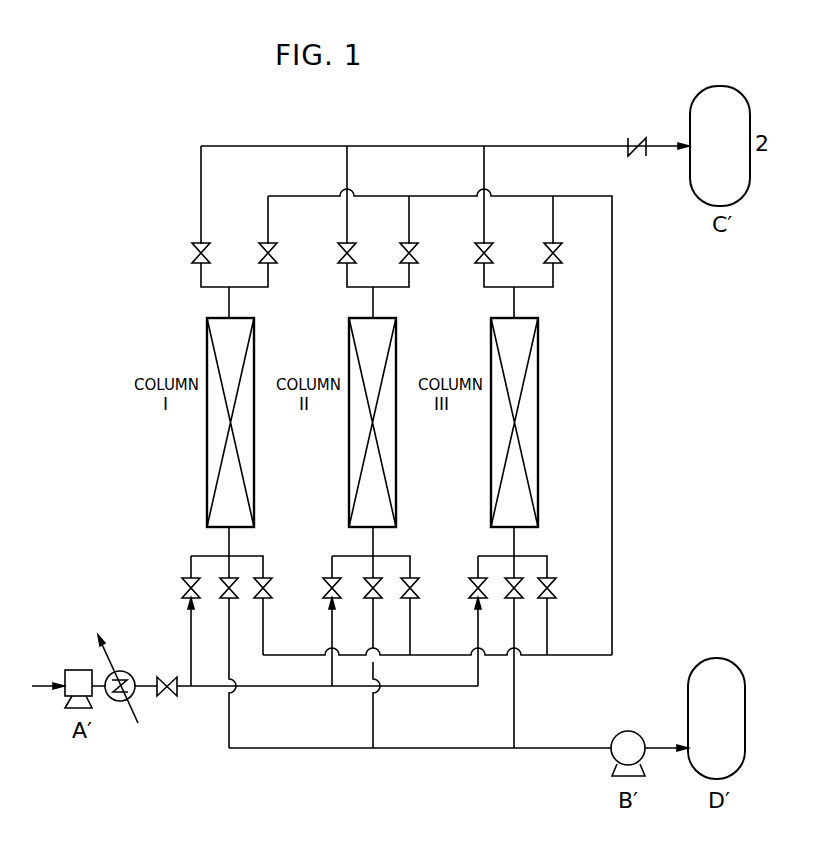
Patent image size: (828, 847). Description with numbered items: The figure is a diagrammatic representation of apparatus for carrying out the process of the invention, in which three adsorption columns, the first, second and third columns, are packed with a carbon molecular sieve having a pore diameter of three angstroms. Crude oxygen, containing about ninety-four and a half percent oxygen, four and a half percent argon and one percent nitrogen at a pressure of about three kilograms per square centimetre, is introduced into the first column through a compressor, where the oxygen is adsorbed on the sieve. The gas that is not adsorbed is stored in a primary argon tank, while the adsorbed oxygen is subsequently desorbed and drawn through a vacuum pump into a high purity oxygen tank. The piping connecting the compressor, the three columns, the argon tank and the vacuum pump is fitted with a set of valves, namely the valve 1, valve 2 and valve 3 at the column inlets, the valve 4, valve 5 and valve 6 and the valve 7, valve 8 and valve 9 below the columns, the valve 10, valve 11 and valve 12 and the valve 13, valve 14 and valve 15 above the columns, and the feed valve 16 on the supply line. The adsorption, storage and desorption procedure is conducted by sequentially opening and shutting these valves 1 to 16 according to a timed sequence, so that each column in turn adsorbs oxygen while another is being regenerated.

The valve 1 is at (184, 592).
The valve 2 is at (326, 585).
The valve 3 is at (473, 587).
The valve 4 is at (222, 593).
The valve 5 is at (365, 595).
The valve 6 is at (506, 595).
The valve 7 is at (270, 596).
The valve 8 is at (418, 596).
The valve 9 is at (555, 596).
The valve 10 is at (195, 250).
The valve 11 is at (341, 250).
The valve 12 is at (478, 250).
The valve 13 is at (262, 250).
The valve 14 is at (403, 250).
The valve 15 is at (547, 250).
The valve 16 is at (169, 677).